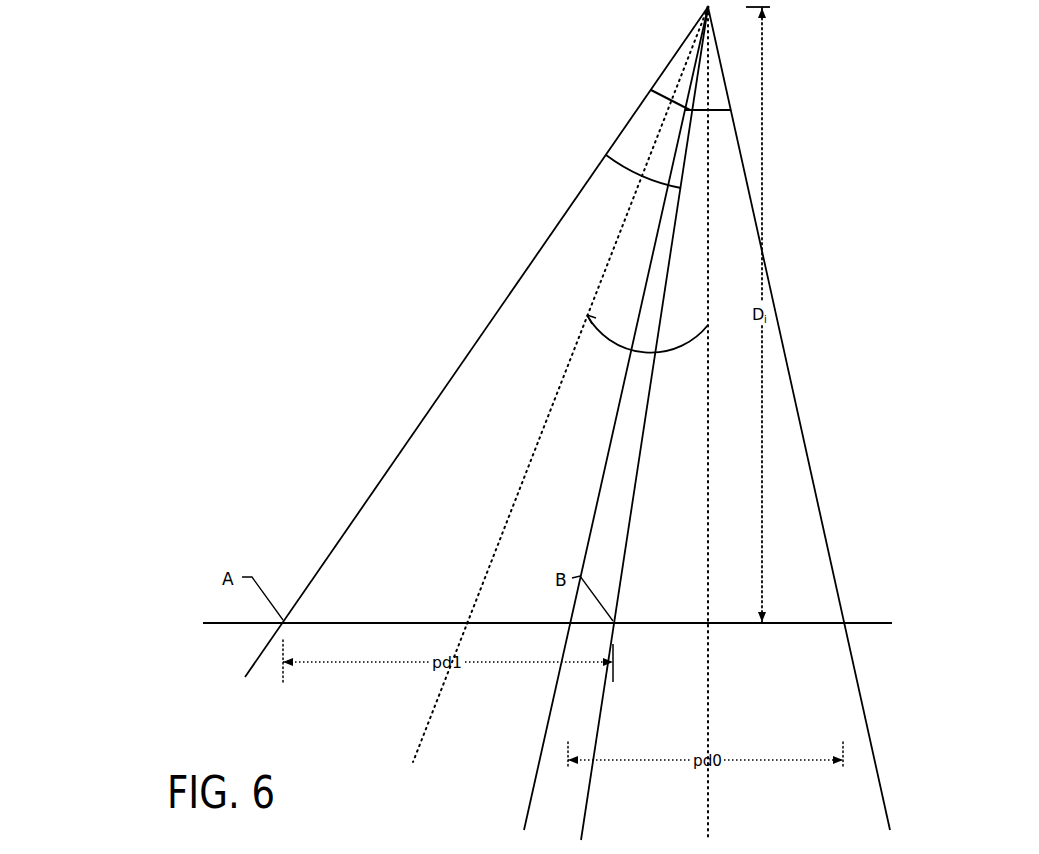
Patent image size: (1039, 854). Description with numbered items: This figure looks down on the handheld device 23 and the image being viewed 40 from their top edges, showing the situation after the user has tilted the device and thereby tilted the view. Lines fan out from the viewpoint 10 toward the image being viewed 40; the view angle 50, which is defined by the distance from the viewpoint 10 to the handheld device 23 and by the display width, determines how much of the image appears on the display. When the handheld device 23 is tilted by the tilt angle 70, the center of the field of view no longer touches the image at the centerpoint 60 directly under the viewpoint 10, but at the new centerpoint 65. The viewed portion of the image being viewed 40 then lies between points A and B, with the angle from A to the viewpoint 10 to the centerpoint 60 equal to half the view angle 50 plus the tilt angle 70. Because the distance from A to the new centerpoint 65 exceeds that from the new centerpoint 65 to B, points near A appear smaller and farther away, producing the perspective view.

The viewpoint 10 is at (706, 9).
The handheld device 23 is at (650, 92).
The view angle 50 is at (627, 177).
The tilt angle 70 is at (612, 343).
The new centerpoint 65 is at (467, 622).
The image being viewed 40 is at (362, 622).
The centerpoint 60 is at (708, 623).